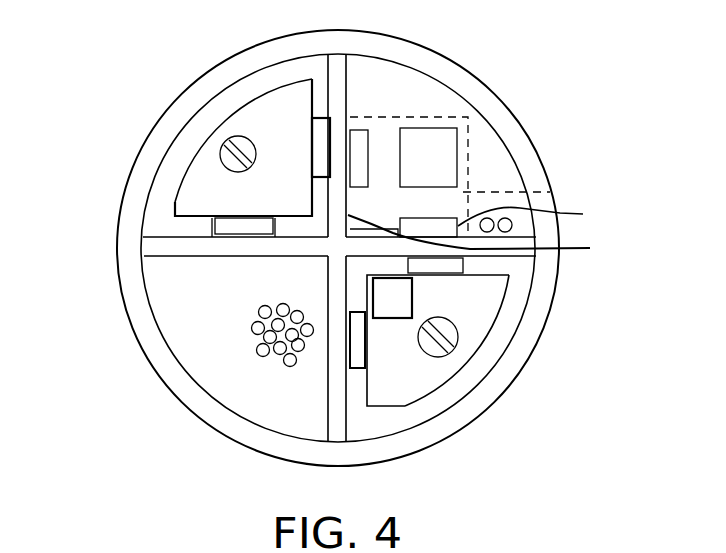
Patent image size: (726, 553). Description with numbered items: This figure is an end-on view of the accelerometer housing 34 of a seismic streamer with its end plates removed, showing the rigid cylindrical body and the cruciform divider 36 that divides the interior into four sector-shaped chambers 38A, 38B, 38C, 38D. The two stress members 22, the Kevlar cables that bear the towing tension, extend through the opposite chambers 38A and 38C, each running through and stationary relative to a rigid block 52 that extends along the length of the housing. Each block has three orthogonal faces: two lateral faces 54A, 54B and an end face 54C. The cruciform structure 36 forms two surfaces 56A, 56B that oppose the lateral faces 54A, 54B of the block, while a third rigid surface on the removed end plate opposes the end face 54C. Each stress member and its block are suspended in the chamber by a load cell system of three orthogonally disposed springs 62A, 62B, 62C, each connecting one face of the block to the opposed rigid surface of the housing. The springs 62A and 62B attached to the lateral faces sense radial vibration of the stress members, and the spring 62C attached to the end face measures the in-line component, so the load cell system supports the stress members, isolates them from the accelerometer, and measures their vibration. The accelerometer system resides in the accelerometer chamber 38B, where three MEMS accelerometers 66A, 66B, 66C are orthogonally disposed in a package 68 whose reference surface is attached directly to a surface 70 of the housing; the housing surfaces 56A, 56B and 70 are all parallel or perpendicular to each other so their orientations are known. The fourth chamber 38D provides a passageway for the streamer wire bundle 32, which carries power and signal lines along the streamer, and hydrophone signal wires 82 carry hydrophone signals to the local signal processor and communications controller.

The stress member 22 is at (227, 165).
The streamer wire bundle 32 is at (265, 363).
The accelerometer housing 34 is at (544, 165).
The cruciform divider 36 is at (333, 383).
The first chamber 38A is at (213, 105).
The accelerometer chamber 38B is at (418, 78).
The third chamber 38C is at (520, 313).
The fourth chamber 38D is at (155, 295).
The rigid block 52 is at (190, 190).
The lateral face of block 54A is at (202, 236).
The lateral face of block 54B is at (322, 97).
The end face of block 54C is at (273, 117).
The housing surface 56A is at (157, 292).
The housing surface 56B is at (322, 131).
The spring load cell 62A is at (190, 236).
The spring load cell 62B is at (365, 137).
The spring load cell 62C is at (288, 210).
The accelerometer 66A is at (540, 215).
The accelerometer 66B is at (450, 148).
The accelerometer 66C is at (450, 152).
The package 68 is at (545, 192).
The housing surface 70 is at (481, 239).
The hydrophone signal wires 82 is at (505, 218).